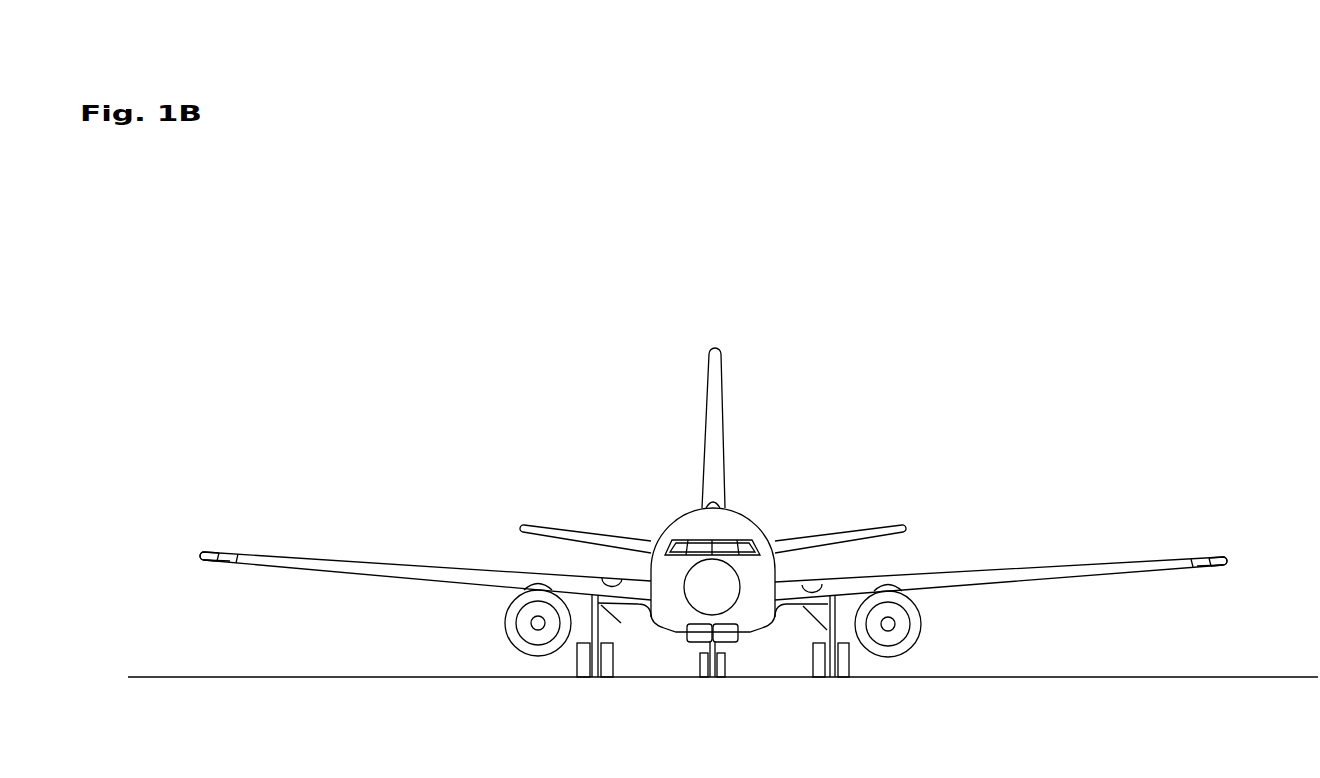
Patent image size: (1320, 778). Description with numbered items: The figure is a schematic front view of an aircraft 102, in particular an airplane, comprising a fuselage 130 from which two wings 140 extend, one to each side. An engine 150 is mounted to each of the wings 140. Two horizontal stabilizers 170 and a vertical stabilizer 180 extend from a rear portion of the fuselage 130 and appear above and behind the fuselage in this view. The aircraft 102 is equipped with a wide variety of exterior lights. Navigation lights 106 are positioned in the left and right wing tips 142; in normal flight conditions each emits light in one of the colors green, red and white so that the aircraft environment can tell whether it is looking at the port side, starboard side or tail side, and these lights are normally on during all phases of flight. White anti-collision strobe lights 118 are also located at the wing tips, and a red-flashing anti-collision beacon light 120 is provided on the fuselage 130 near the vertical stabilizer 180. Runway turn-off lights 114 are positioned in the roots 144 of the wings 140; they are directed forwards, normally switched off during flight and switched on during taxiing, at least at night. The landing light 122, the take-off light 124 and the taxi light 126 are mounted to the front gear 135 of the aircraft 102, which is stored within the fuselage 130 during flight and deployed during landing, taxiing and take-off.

The aircraft 102 is at (737, 531).
The fuselage 130 is at (681, 502).
The red-flashing anti-collision beacon light 120 is at (717, 492).
The vertical stabilizer 180 is at (733, 389).
The horizontal stabilizer 170 is at (578, 511).
The wing 140 is at (342, 534).
The white anti-collision strobe light 118 is at (229, 551).
The navigation light 106 is at (213, 551).
The wing tip 142 is at (199, 577).
The runway turn-off light 114 is at (609, 578).
The engine 150 is at (500, 617).
The wing root 144 is at (642, 619).
The take-off light 124 is at (687, 633).
The front gear 135 is at (724, 682).
The taxi light 126 is at (700, 651).
The landing light 122 is at (740, 633).